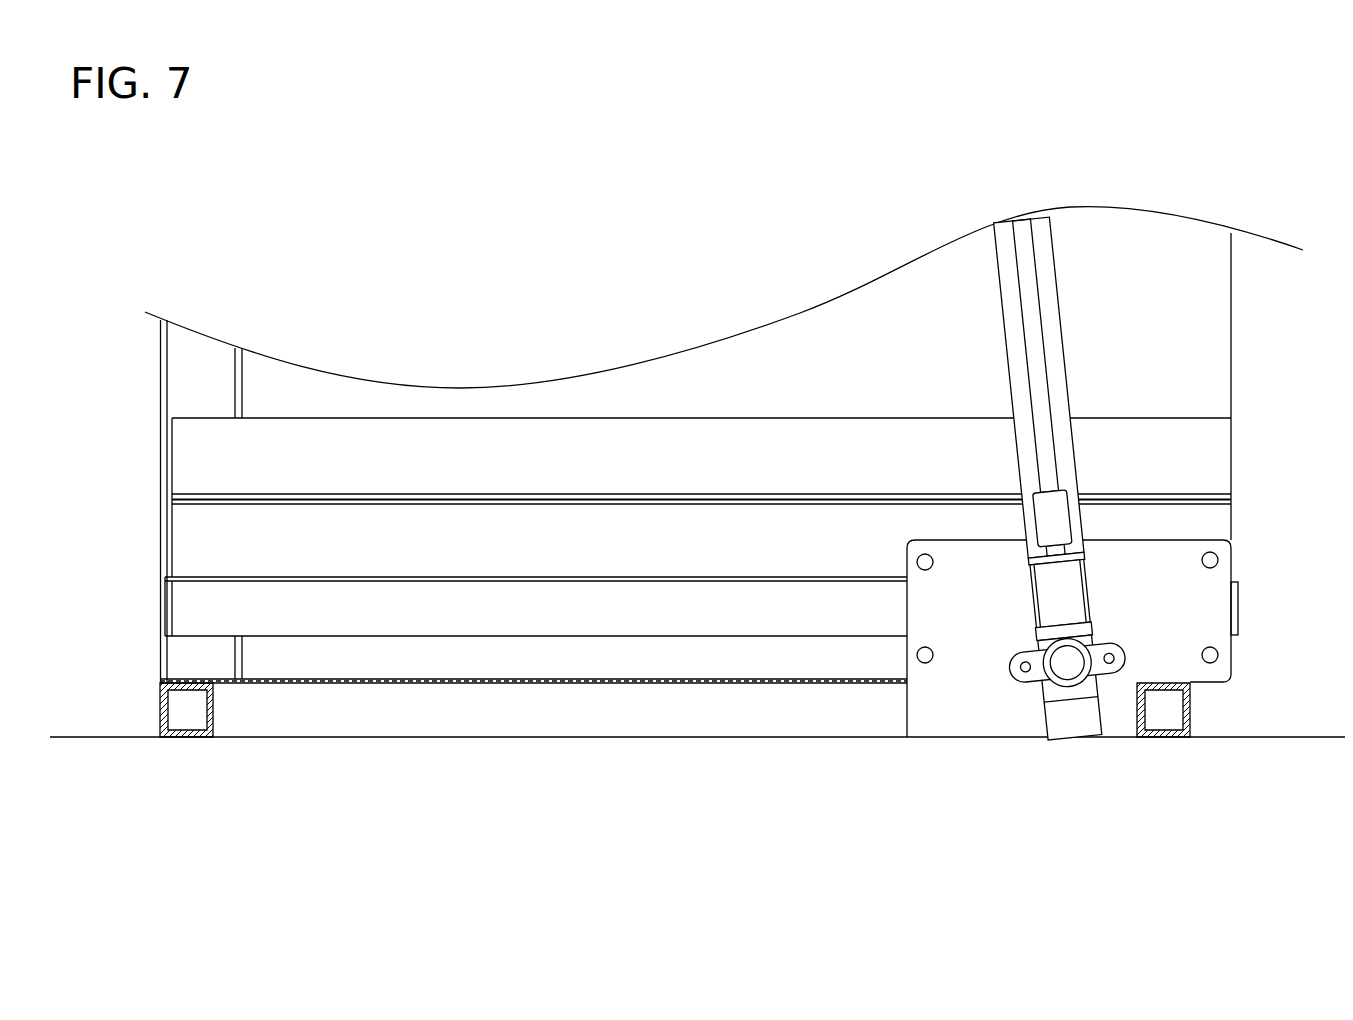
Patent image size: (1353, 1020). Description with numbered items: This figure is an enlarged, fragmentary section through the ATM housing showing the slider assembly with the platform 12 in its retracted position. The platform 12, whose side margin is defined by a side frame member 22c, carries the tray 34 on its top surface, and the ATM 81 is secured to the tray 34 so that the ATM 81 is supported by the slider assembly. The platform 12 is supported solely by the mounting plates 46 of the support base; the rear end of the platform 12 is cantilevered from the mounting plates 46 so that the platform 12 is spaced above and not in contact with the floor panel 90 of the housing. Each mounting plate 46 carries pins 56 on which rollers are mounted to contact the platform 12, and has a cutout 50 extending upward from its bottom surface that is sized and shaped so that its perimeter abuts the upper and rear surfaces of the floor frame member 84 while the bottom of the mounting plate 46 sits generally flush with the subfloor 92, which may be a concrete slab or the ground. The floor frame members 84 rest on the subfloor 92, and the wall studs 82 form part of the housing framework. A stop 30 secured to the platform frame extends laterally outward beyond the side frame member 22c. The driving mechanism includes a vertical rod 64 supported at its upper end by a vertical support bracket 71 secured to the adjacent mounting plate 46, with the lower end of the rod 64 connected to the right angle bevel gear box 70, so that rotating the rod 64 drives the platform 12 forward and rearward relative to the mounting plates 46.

The platform 12 is at (349, 637).
The side frame member 22c is at (562, 610).
The stop 30 is at (1238, 604).
The tray 34 is at (1203, 455).
The mounting plate 46 is at (1160, 563).
The cutout 50 is at (1203, 687).
The pin 56 is at (1216, 564).
The vertical rod 64 is at (1027, 260).
The right angle bevel gear box 70 is at (1036, 597).
The vertical support bracket 71 is at (1057, 299).
The ATM 81 is at (1178, 318).
The wall stud 82 is at (197, 647).
The floor frame member 84 is at (160, 708).
The floor panel 90 is at (692, 685).
The subfloor 92 is at (406, 738).